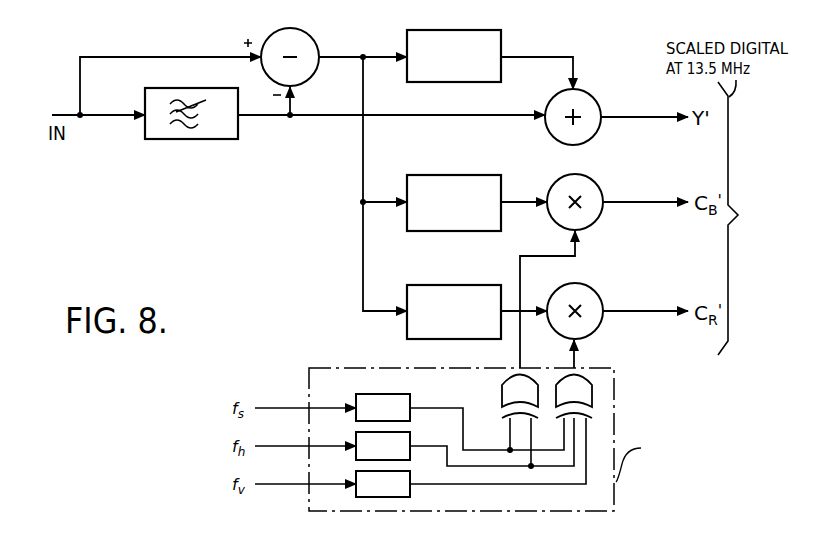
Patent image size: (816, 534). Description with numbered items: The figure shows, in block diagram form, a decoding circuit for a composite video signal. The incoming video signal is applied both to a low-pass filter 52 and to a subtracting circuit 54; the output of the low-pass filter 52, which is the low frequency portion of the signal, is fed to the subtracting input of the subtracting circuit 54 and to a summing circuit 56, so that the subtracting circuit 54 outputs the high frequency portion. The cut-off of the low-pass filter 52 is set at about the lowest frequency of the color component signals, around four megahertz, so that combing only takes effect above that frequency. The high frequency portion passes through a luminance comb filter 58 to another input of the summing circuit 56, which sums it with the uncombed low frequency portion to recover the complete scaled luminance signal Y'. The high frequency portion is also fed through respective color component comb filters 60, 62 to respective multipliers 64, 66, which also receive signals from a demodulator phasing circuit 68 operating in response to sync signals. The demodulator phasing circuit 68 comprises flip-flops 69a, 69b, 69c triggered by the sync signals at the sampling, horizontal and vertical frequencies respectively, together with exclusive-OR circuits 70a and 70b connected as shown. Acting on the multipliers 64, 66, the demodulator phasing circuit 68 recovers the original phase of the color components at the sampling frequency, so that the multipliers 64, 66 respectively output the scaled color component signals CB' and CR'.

The low-pass filter 52 is at (175, 139).
The subtracting circuit 54 is at (310, 36).
The summing circuit 56 is at (595, 137).
The luminance comb filter 58 is at (501, 36).
The color component comb filter 60 is at (501, 183).
The color component comb filter 62 is at (462, 285).
The multiplier 64 is at (600, 191).
The multiplier 66 is at (598, 294).
The demodulator phasing circuit 68 is at (617, 440).
The flip-flop 69a is at (410, 394).
The flip-flop 69b is at (420, 427).
The flip-flop 69c is at (418, 467).
The exclusive-OR circuit 70a is at (512, 372).
The exclusive-OR circuit 70b is at (584, 373).